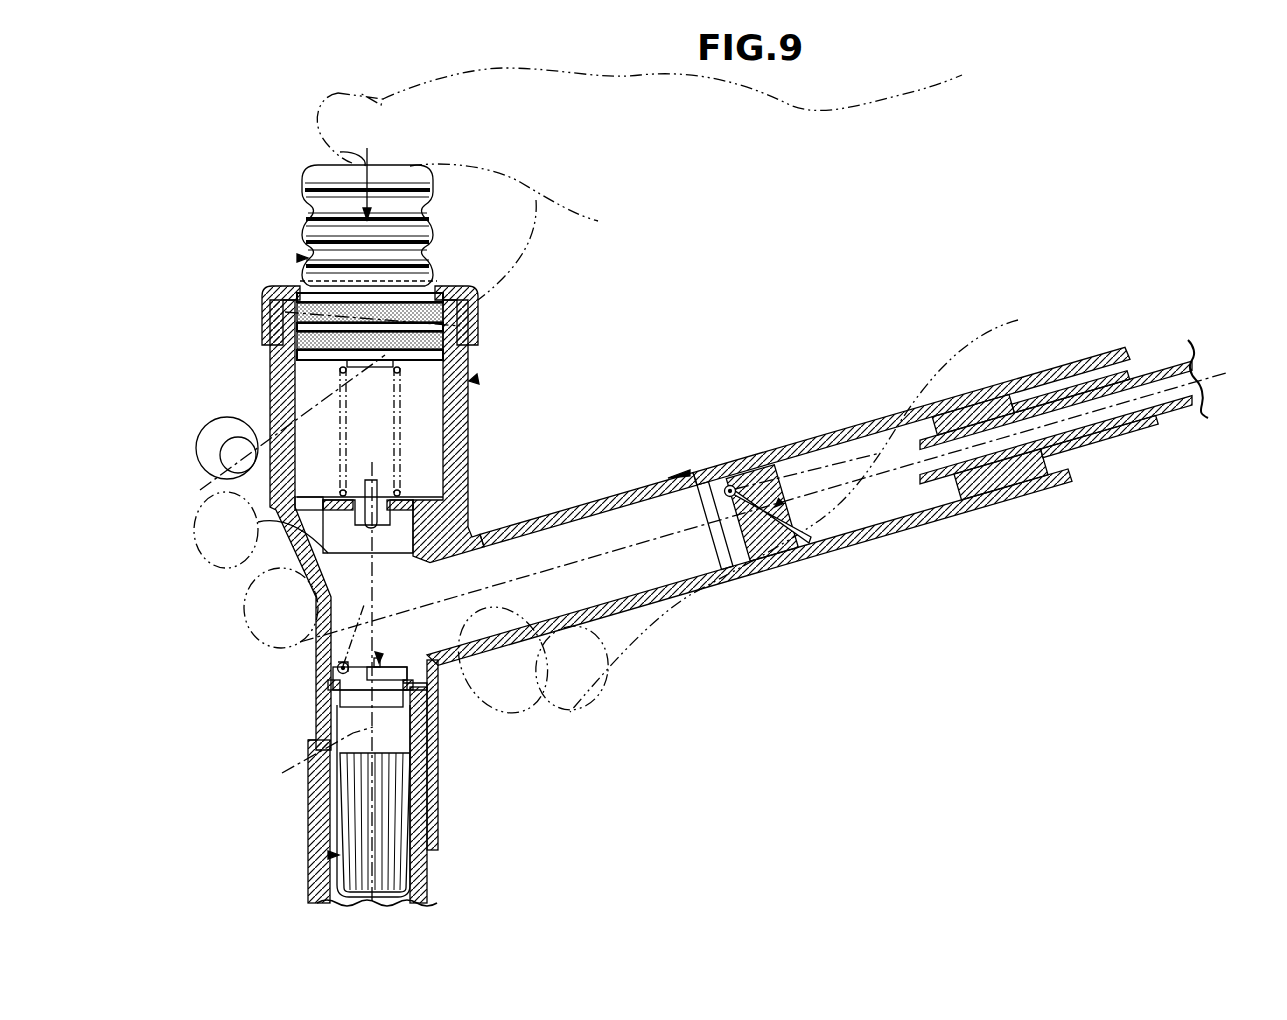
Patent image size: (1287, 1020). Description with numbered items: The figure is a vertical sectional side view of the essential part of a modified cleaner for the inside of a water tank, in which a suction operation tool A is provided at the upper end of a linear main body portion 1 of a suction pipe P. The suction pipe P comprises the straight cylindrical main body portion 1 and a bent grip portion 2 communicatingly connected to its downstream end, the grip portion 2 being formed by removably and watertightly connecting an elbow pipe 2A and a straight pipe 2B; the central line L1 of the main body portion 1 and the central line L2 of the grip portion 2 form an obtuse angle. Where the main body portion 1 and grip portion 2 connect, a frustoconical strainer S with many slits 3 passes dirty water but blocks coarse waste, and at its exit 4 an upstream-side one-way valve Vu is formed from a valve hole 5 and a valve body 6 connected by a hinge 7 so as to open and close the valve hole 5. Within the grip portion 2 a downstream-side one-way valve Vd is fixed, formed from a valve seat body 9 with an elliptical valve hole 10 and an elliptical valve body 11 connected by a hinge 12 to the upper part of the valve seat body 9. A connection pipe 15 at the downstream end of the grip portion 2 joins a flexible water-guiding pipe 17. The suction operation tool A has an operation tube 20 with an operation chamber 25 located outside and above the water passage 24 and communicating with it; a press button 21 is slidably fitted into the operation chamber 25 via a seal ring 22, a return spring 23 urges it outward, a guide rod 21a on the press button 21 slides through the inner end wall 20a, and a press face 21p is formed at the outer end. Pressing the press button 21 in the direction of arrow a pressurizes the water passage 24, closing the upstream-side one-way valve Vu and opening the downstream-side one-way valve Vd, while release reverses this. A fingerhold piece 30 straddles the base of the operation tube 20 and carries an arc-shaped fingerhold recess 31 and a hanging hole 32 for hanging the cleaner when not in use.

The main body portion 1 is at (428, 877).
The grip portion 2 is at (778, 506).
The elbow pipe 2A is at (527, 521).
The straight pipe 2B is at (692, 473).
The slits 3 is at (368, 773).
The exit 4 is at (367, 698).
The valve hole 5 is at (387, 678).
The valve body 6 is at (344, 664).
The hinge 7 is at (350, 673).
The valve seat body 9 is at (722, 558).
The valve hole 10 is at (797, 557).
The valve body 11 is at (800, 524).
The hinge 12 is at (731, 487).
The connection pipe 15 is at (957, 474).
The water-guiding pipe 17 is at (1147, 428).
The operation tube 20 is at (399, 525).
The inner end wall 20a is at (400, 503).
The press button 21 is at (421, 230).
The guide rod 21a is at (362, 423).
The press face 21p is at (340, 152).
The seal ring 22 is at (297, 313).
The return spring 23 is at (340, 378).
The water passage 24 is at (469, 582).
The operation chamber 25 is at (430, 409).
The fingerhold piece 30 is at (219, 418).
The fingerhold recess 31 is at (203, 517).
The hanging hole 32 is at (219, 459).
The suction operation tool A is at (303, 258).
The suction pipe P is at (474, 380).
The strainer S is at (333, 855).
The central line of the main body portion L1 is at (328, 670).
The central line of the grip portion L2 is at (292, 646).
The upstream-side one-way valve Vu is at (380, 656).
The downstream-side one-way valve Vd is at (782, 500).
The arrow a is at (372, 182).